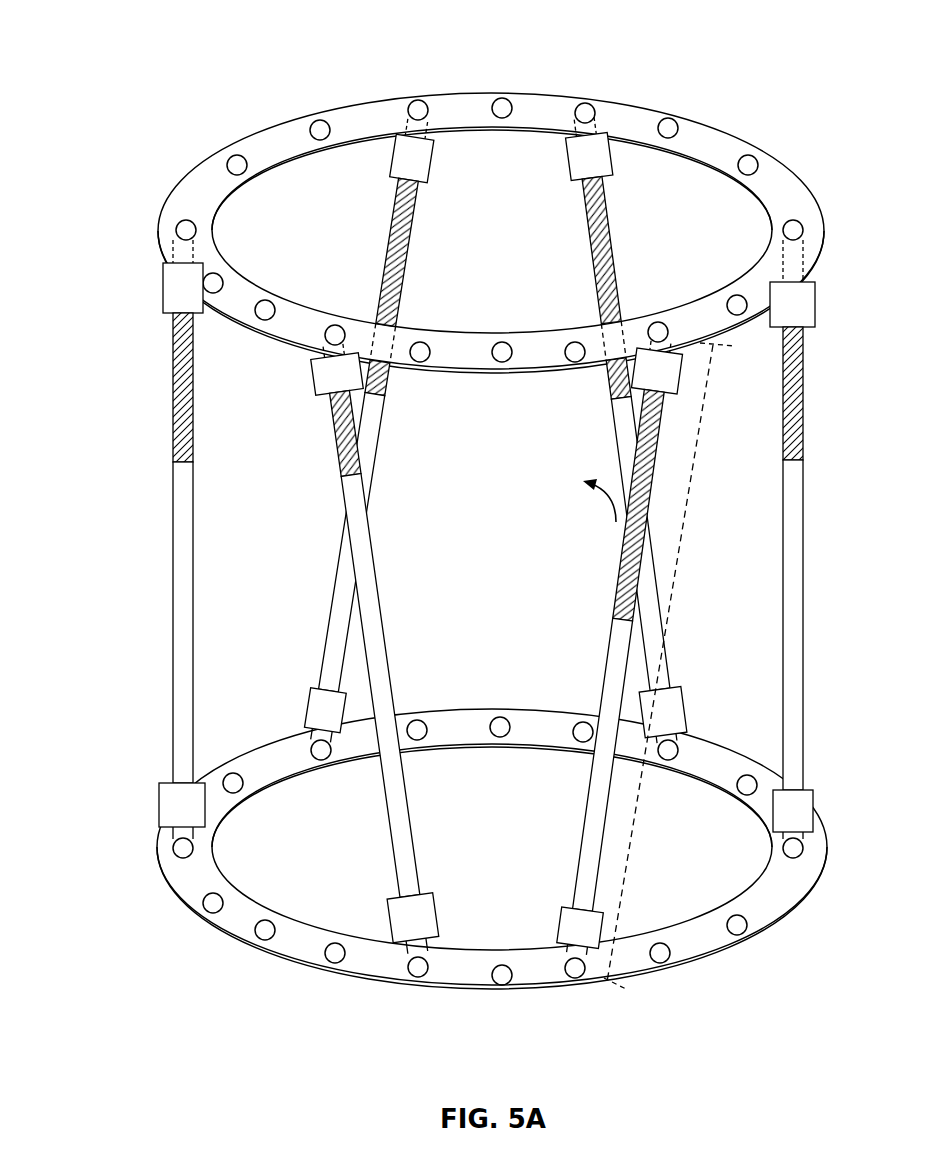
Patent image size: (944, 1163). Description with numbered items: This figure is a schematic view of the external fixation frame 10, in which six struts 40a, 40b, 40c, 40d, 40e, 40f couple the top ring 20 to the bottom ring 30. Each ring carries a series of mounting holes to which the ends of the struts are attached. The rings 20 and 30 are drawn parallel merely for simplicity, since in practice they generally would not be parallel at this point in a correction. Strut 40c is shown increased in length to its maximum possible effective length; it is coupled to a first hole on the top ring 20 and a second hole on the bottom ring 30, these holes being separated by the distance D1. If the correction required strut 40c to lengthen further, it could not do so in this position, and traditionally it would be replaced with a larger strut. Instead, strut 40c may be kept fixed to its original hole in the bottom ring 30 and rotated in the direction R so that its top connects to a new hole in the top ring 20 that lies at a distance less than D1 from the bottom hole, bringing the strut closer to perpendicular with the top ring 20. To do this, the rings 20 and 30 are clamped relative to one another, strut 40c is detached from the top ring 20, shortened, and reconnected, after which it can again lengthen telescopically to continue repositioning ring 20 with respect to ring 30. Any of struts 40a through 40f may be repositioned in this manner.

The fixation frame 10 is at (88, 40).
The top ring 20 is at (783, 187).
The bottom ring 30 is at (240, 927).
The strut 40a is at (178, 637).
The strut 40b is at (400, 851).
The strut 40c is at (583, 878).
The strut 40d is at (797, 661).
The strut 40e is at (590, 218).
The strut 40f is at (402, 210).
The distance D1 is at (670, 666).
The direction R is at (591, 504).